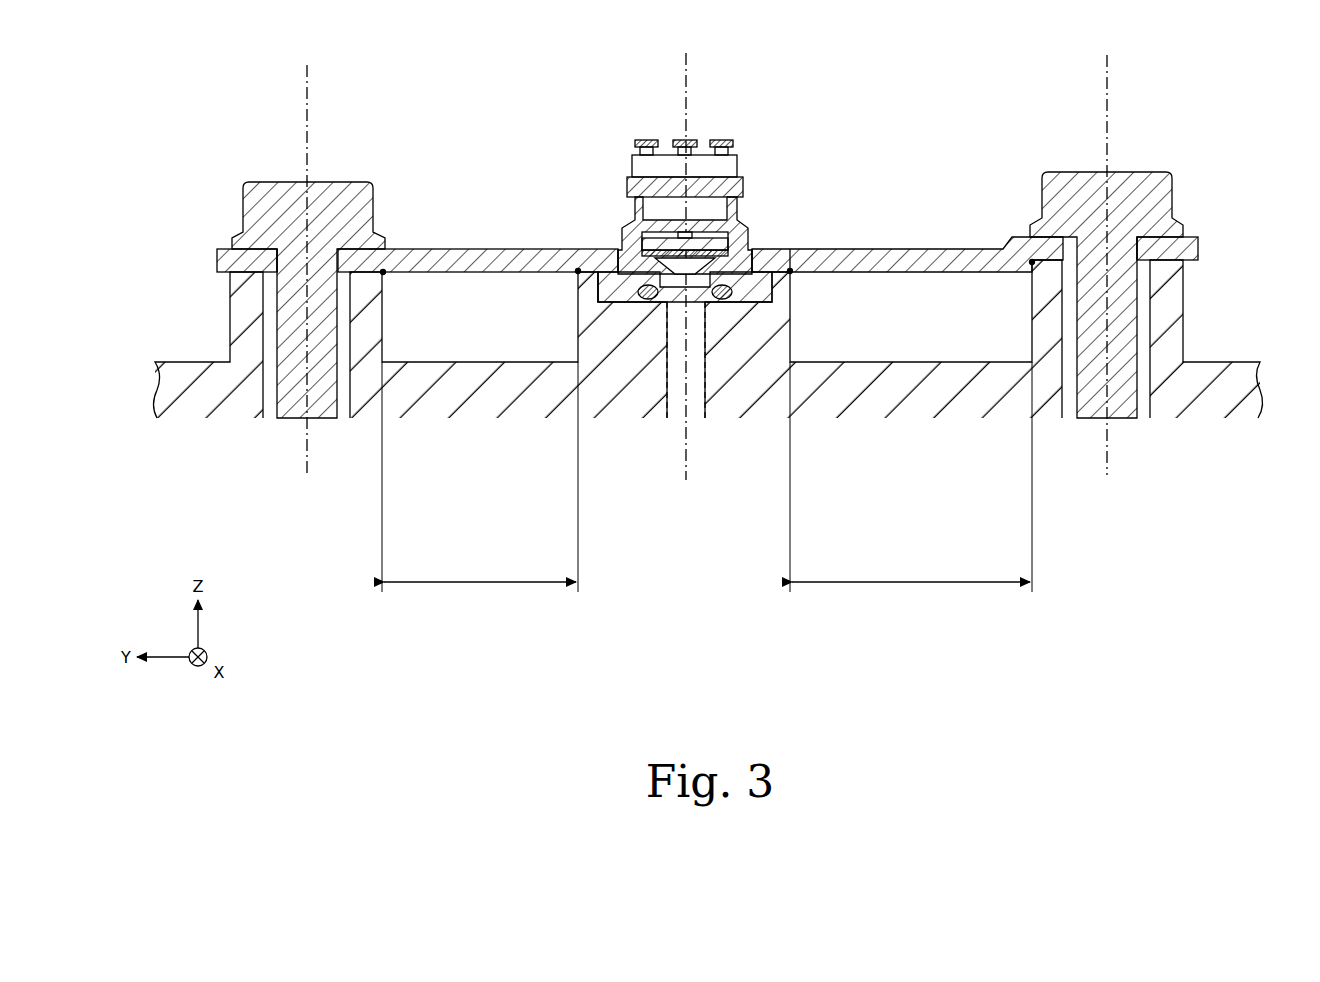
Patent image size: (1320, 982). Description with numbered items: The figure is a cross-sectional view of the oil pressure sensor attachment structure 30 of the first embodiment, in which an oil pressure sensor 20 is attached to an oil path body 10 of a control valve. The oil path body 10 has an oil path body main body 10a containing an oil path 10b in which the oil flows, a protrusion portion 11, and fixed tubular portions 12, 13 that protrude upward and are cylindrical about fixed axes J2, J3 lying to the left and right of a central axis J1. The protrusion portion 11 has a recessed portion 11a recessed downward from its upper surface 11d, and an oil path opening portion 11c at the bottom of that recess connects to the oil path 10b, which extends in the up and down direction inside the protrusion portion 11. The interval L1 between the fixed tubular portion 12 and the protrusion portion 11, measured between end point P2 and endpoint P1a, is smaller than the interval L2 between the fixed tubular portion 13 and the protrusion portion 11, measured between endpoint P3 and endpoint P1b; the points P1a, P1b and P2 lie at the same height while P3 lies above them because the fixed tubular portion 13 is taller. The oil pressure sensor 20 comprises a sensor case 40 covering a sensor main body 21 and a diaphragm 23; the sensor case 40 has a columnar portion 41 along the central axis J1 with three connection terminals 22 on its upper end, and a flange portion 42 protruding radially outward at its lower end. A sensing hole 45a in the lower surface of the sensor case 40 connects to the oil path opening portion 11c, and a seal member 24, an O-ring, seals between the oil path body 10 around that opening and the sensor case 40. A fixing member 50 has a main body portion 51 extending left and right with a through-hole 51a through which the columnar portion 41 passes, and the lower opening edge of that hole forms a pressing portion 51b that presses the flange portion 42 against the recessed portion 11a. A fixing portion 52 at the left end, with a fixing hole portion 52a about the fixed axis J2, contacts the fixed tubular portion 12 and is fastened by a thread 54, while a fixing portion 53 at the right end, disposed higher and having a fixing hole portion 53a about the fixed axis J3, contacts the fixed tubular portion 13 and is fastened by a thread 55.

The oil path body 10 is at (717, 365).
The oil path body main body 10a is at (900, 380).
The oil path 10b is at (693, 424).
The protrusion portion 11 is at (785, 340).
The recessed portion 11a is at (625, 304).
The oil path opening portion 11c is at (675, 370).
The upper surface of the protrusion portion 11d is at (790, 262).
The fixed tubular portion 12 is at (378, 328).
The fixed tubular portion 13 is at (1035, 350).
The oil pressure sensor 20 is at (651, 264).
The sensor main body 21 is at (668, 236).
The connection terminals 22 is at (722, 140).
The diaphragm 23 is at (717, 238).
The seal member 24 is at (770, 300).
The oil pressure sensor attachment structure 30 is at (1157, 244).
The sensor case 40 is at (621, 314).
The columnar portion 41 is at (624, 188).
The flange portion 42 is at (646, 337).
The sensing hole 45a is at (692, 258).
The fixing member 50 is at (700, 307).
The main body portion 51 is at (905, 250).
The through-hole 51a is at (650, 300).
The pressing portion 51b is at (754, 242).
The fixing portion 52 is at (198, 234).
The fixing hole portion 52a is at (280, 262).
The fixing portion 53 is at (1209, 189).
The fixing hole portion 53a is at (1135, 225).
The thread 54 is at (340, 205).
The thread 55 is at (1075, 190).
The central axis J1 is at (690, 62).
The fixed axis J2 is at (312, 72).
The fixed axis J3 is at (1112, 62).
The left endpoint P1a is at (577, 273).
The right endpoint P1b is at (792, 273).
The right end point P2 is at (386, 274).
The left endpoint P3 is at (1031, 265).
The interval L1 is at (480, 477).
The interval L2 is at (911, 477).